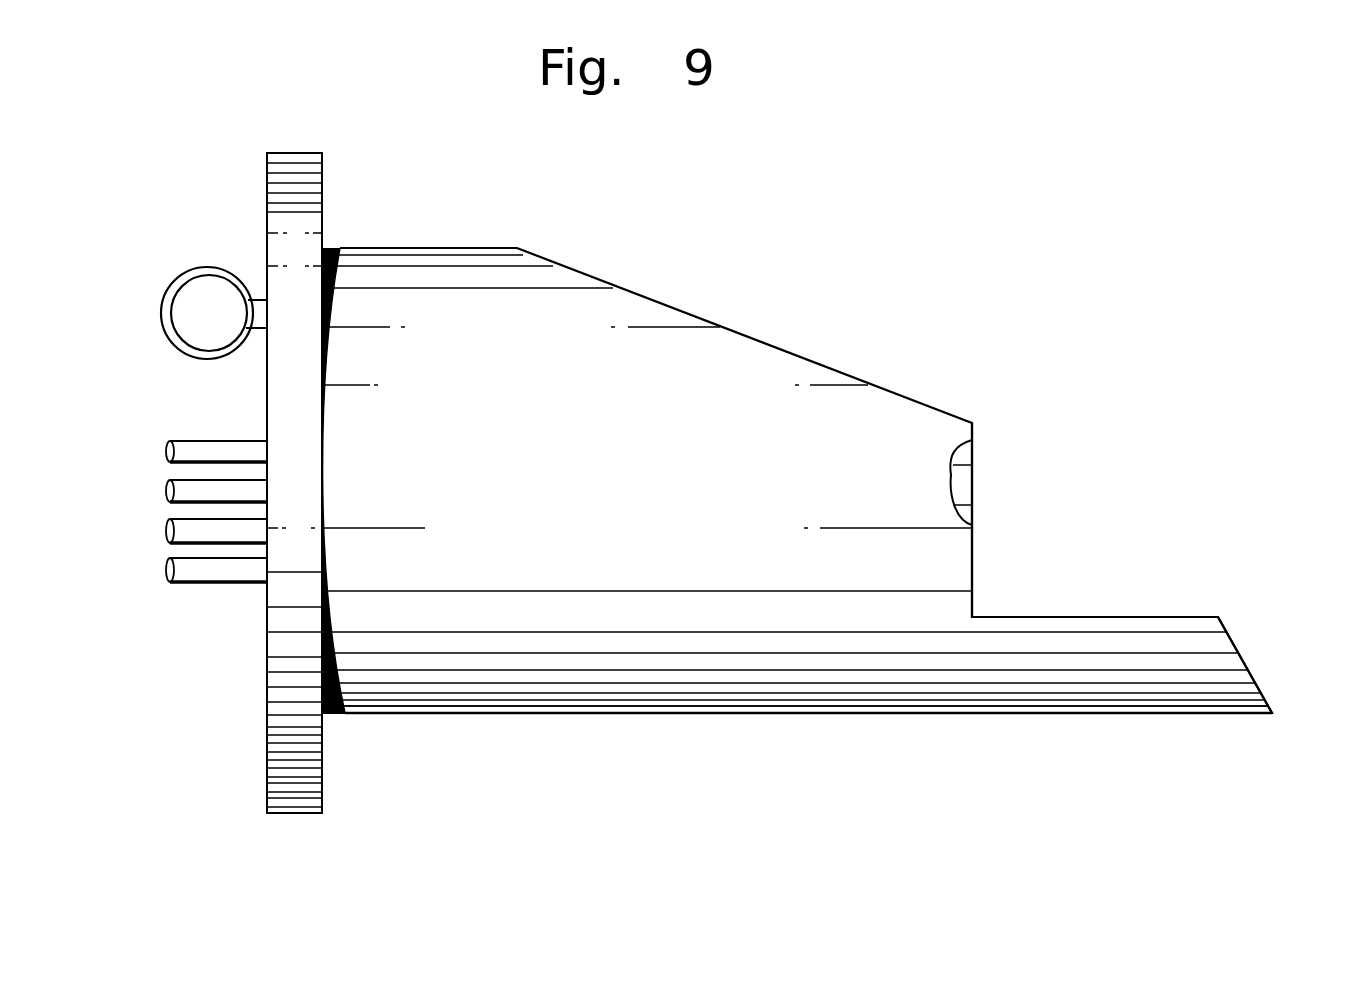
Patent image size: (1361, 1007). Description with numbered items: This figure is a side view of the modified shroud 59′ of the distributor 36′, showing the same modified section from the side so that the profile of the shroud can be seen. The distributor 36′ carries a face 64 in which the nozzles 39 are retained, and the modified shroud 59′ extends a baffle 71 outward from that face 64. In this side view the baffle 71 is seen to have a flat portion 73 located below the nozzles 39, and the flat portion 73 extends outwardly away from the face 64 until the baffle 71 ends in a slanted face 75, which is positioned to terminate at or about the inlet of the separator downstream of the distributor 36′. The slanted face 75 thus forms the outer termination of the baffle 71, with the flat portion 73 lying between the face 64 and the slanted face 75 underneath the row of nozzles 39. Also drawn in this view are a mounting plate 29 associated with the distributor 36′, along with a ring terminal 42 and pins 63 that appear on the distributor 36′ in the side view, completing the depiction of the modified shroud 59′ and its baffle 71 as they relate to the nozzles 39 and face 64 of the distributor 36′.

The distributor 36′ is at (672, 752).
The mounting plate 29 is at (288, 814).
The ring terminal 42 is at (202, 270).
The pins 63 is at (196, 452).
The nozzles 39 is at (974, 480).
The face 64 is at (974, 567).
The flat portion 73 is at (1072, 616).
The slanted face 75 is at (1245, 657).
The modified shroud 59′ is at (860, 706).
The baffle 71 is at (1103, 700).